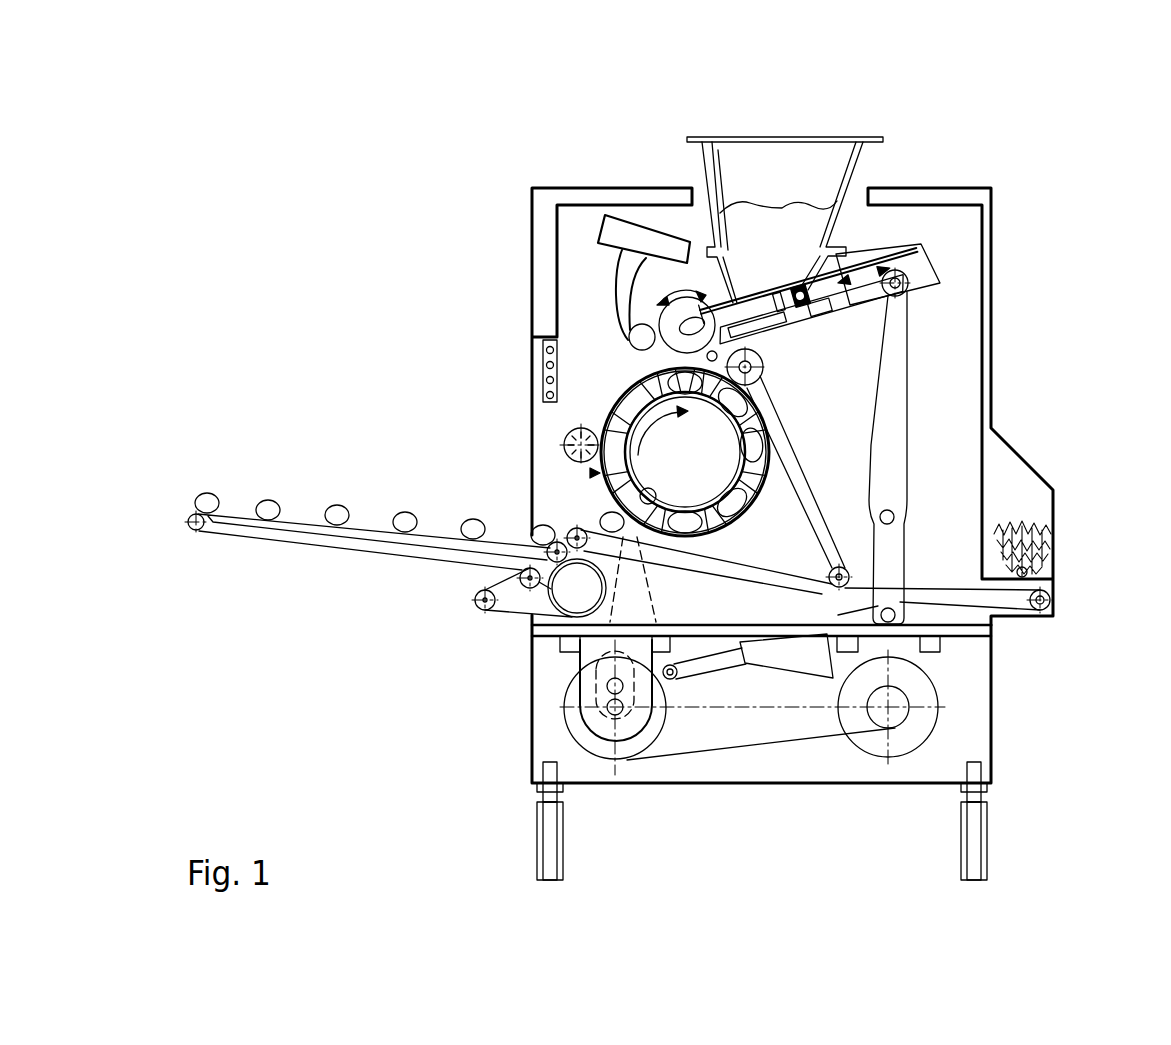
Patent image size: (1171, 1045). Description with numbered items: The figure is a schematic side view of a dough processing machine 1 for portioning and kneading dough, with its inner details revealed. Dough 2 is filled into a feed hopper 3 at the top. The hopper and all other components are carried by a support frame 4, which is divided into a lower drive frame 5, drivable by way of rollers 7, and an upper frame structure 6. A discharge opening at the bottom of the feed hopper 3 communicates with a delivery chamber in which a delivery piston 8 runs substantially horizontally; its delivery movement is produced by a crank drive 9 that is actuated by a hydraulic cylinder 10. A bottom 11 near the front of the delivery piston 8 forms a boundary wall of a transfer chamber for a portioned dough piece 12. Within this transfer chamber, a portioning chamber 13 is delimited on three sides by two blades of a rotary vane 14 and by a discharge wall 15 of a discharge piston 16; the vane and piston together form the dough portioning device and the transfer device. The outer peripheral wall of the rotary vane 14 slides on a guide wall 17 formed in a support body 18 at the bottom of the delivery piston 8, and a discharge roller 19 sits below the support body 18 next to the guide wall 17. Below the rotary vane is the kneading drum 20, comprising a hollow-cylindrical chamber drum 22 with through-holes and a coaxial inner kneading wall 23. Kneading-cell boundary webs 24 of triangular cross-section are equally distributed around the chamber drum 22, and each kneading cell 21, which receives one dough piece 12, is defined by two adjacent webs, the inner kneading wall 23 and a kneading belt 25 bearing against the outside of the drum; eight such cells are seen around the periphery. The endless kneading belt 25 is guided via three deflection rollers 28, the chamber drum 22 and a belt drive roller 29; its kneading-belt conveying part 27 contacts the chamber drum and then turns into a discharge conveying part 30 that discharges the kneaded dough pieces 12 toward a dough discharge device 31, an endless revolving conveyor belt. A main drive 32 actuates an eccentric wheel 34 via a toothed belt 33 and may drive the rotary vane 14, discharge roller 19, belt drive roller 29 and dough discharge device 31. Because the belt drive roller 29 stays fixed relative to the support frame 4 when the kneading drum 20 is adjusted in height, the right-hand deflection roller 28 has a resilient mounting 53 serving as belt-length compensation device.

The dough processing machine 1 is at (1010, 194).
The dough 2 is at (822, 213).
The feed hopper 3 is at (768, 150).
The support frame 4 is at (1006, 711).
The drive frame 5 is at (1000, 750).
The frame structure 6 is at (986, 389).
The rollers 7 is at (550, 852).
The delivery piston 8 is at (808, 266).
The crank drive 9 is at (895, 420).
The hydraulic cylinder 10 is at (755, 665).
The bottom 11 is at (760, 298).
The portioned dough piece 12 is at (675, 330).
The portioning chamber 13 is at (668, 330).
The rotary vane 14 is at (683, 305).
The discharge wall 15 is at (737, 303).
The discharge piston 16 is at (648, 332).
The guide wall 17 is at (655, 350).
The support body 18 is at (917, 259).
The discharge roller 19 is at (765, 338).
The kneading drum 20 is at (591, 473).
The kneading cell 21 is at (648, 372).
The chamber drum 22 is at (617, 402).
The inner kneading wall 23 is at (645, 494).
The kneading-cell boundary webs 24 is at (685, 452).
The kneading belt 25 is at (790, 418).
The kneading-belt conveying part 27 is at (740, 527).
The deflection rollers 28 is at (570, 535).
The belt drive roller 29 is at (765, 367).
The discharge conveying part 30 is at (658, 658).
The dough discharge device 31 is at (300, 510).
The main drive 32 is at (882, 752).
The toothed belt 33 is at (736, 749).
The eccentric wheel 34 is at (633, 746).
The resilient mounting 53 is at (1052, 597).